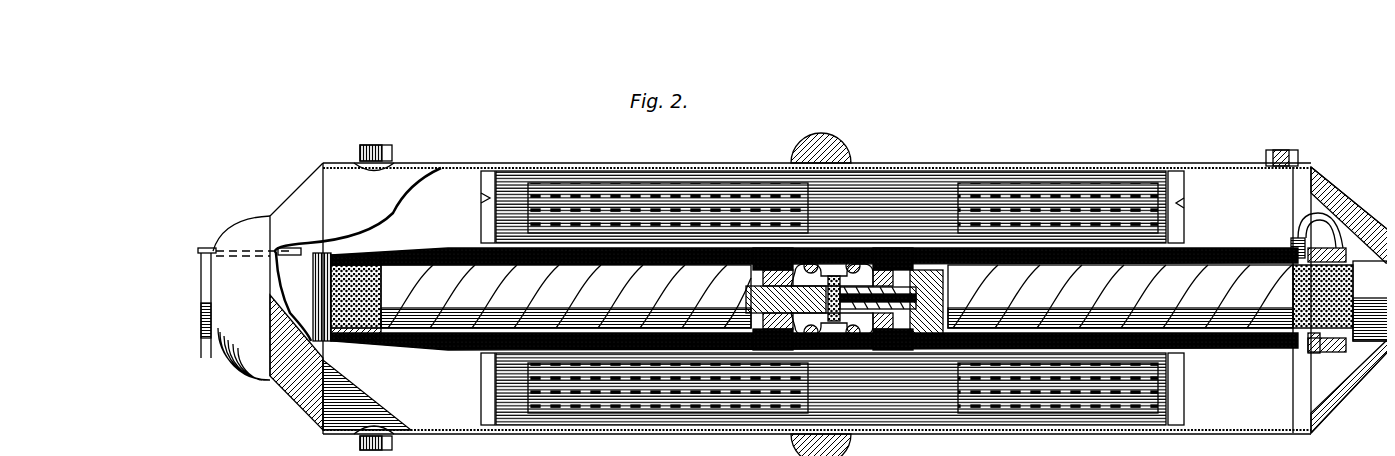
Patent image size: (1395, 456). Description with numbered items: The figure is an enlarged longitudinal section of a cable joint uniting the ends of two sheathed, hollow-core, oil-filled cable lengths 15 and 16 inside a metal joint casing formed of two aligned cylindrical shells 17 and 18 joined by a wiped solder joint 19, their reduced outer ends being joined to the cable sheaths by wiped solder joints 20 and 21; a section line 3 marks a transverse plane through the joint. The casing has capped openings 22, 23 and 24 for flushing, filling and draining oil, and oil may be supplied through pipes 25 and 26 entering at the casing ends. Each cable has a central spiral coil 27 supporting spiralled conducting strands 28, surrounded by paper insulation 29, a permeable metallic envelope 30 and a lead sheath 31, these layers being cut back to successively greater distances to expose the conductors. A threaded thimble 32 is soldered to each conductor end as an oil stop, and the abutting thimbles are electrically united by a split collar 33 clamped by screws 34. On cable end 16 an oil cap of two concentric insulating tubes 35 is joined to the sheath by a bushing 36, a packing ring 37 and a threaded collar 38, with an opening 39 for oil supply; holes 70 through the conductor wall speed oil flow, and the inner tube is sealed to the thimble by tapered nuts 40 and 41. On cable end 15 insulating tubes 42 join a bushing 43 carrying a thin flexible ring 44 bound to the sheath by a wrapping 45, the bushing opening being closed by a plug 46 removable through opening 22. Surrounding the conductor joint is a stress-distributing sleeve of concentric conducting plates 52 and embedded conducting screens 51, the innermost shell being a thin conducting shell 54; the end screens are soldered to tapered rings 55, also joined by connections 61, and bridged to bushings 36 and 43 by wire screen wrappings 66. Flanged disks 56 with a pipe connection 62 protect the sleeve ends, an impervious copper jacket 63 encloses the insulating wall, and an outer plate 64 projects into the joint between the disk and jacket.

The section line 3 is at (905, 113).
The cable length 15 is at (208, 315).
The cable length 16 is at (1370, 301).
The cylindrical shell 17 is at (555, 147).
The cylindrical shell 18 is at (1060, 151).
The wiped solder joint 19 is at (813, 148).
The wiped solder joint 20 is at (243, 362).
The wiped solder joint 21 is at (1355, 375).
The opening 22 is at (384, 140).
The opening 23 is at (1255, 142).
The opening 24 is at (388, 438).
The pipe 25 is at (200, 238).
The pipe 26 is at (1340, 210).
The spiral coil 27 is at (1003, 281).
The conducting strands 28 is at (845, 240).
The insulation 29 is at (837, 296).
The metallic envelope 30 is at (318, 340).
The cable sheath 31 is at (821, 298).
The thimble 32 is at (735, 340).
The split collar 33 is at (855, 250).
The screws 34 is at (945, 302).
The insulating tubes 35 is at (1212, 235).
The bushing 36 is at (1252, 338).
The packing ring 37 is at (1305, 352).
The collar 38 is at (1312, 346).
The opening 39 is at (1283, 245).
The nut 40 is at (905, 240).
The nut 41 is at (880, 240).
The insulating tubes 42 is at (442, 243).
The bushing 43 is at (420, 327).
The flexible ring 44 is at (305, 270).
The wrapping 45 is at (305, 323).
The plug 46 is at (372, 252).
The conducting screens 51 is at (615, 200).
The conducting plates 52 is at (1022, 400).
The conducting shell 54 is at (765, 235).
The conducting rings 55 is at (460, 338).
The flanged disks 56 is at (478, 388).
The connections 61 is at (495, 172).
The pipe connection 62 is at (473, 194).
The jacket 63 is at (672, 152).
The plate 64 is at (1090, 170).
The wrappings 66 is at (430, 240).
The holes 70 is at (940, 240).